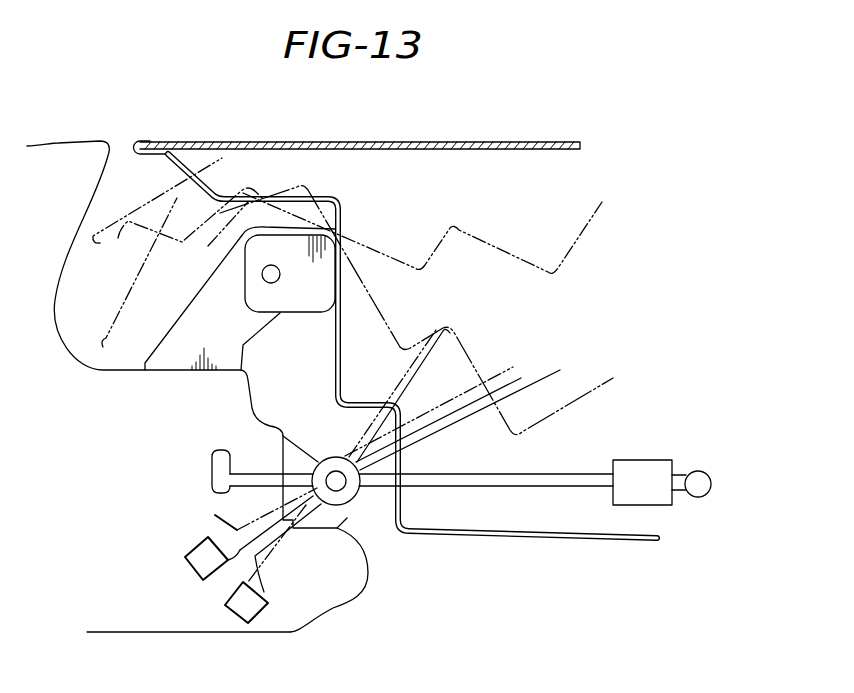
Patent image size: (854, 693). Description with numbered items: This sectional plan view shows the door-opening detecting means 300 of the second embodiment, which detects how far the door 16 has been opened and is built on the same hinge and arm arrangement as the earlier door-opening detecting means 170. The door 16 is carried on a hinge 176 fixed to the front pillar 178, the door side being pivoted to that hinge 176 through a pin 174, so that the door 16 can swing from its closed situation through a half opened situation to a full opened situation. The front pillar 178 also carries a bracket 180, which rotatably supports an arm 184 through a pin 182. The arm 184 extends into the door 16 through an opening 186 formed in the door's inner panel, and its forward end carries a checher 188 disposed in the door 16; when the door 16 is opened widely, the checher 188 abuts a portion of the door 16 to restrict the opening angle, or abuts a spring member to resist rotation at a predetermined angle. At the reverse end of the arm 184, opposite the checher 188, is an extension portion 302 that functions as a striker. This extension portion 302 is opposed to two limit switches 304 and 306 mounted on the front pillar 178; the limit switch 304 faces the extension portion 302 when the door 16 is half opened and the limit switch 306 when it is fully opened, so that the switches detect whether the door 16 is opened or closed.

The door 16 is at (502, 141).
The door-opening detecting means 170 is at (302, 313).
The pin 174 is at (280, 277).
The hinge 176 is at (243, 347).
The front pillar 178 is at (148, 630).
The bracket 180 is at (315, 457).
The pin 182 is at (338, 492).
The arm 184 is at (472, 474).
The opening 186 is at (403, 505).
The checher 188 is at (637, 460).
The door-opening detecting means 300 is at (576, 306).
The extension portion 302 is at (250, 472).
The limit switch 304 is at (190, 565).
The limit switch 306 is at (227, 610).